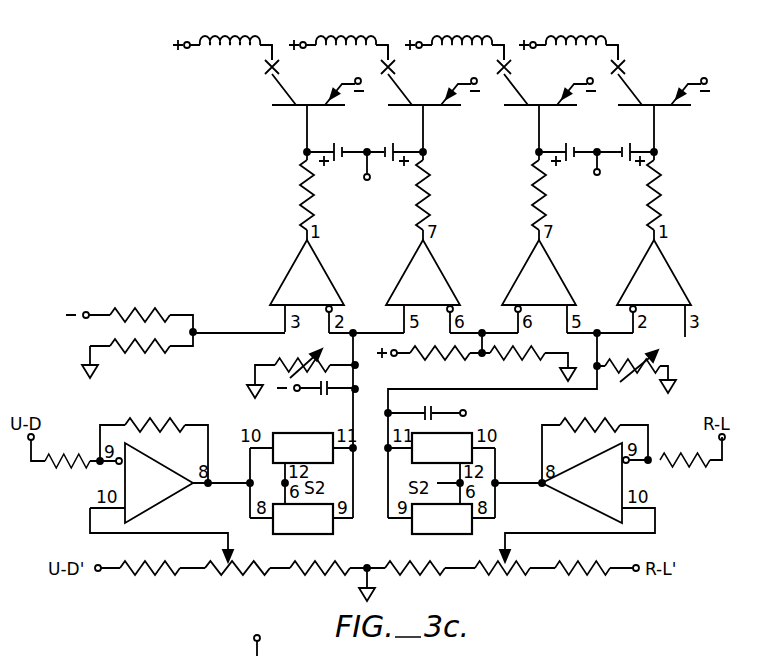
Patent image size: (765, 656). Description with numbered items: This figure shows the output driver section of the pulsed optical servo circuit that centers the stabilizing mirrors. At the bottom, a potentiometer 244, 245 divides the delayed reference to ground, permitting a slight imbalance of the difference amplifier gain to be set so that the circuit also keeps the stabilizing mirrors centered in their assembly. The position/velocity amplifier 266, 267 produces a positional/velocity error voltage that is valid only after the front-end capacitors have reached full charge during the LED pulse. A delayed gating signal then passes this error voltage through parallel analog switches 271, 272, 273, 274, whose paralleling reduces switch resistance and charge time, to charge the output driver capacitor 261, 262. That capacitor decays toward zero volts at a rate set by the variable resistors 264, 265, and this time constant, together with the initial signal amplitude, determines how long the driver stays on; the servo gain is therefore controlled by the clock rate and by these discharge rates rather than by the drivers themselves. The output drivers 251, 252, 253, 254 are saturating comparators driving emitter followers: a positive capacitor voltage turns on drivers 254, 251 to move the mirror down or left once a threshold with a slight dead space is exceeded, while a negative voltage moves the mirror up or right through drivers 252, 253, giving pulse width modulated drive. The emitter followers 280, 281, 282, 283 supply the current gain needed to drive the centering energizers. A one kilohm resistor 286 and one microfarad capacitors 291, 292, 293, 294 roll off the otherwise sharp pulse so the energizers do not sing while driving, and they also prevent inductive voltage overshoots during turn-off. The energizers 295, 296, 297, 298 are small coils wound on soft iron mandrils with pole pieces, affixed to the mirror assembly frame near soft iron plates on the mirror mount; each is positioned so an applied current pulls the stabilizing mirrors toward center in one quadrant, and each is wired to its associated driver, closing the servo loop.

The energizer 295 is at (217, 39).
The energizer 296 is at (335, 39).
The energizer 297 is at (448, 39).
The energizer 298 is at (562, 39).
The emitter follower 280 is at (304, 104).
The emitter follower 281 is at (421, 104).
The emitter follower 282 is at (536, 104).
The emitter follower 283 is at (651, 104).
The capacitor 291 is at (336, 145).
The capacitor 292 is at (390, 145).
The capacitor 293 is at (567, 145).
The capacitor 294 is at (627, 145).
The resistor 286 is at (408, 206).
The output driver 251 is at (330, 266).
The output driver 252 is at (445, 266).
The output driver 253 is at (562, 266).
The output driver 254 is at (677, 266).
The variable resistor 264 is at (282, 358).
The variable resistor 265 is at (670, 360).
The output driver capacitor 261 is at (306, 398).
The output driver capacitor 262 is at (440, 411).
The position/velocity amplifier 266 is at (140, 452).
The position/velocity amplifier 267 is at (572, 500).
The analog switch 271 is at (301, 448).
The analog switch 272 is at (301, 519).
The analog switch 273 is at (441, 448).
The analog switch 274 is at (441, 519).
The potentiometer 244 is at (238, 555).
The potentiometer 245 is at (513, 555).